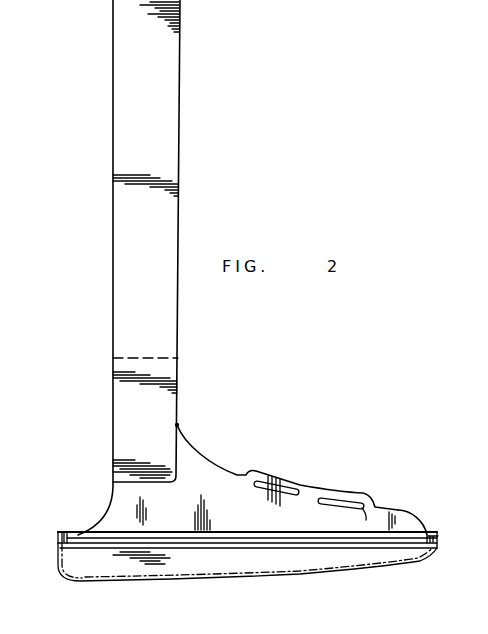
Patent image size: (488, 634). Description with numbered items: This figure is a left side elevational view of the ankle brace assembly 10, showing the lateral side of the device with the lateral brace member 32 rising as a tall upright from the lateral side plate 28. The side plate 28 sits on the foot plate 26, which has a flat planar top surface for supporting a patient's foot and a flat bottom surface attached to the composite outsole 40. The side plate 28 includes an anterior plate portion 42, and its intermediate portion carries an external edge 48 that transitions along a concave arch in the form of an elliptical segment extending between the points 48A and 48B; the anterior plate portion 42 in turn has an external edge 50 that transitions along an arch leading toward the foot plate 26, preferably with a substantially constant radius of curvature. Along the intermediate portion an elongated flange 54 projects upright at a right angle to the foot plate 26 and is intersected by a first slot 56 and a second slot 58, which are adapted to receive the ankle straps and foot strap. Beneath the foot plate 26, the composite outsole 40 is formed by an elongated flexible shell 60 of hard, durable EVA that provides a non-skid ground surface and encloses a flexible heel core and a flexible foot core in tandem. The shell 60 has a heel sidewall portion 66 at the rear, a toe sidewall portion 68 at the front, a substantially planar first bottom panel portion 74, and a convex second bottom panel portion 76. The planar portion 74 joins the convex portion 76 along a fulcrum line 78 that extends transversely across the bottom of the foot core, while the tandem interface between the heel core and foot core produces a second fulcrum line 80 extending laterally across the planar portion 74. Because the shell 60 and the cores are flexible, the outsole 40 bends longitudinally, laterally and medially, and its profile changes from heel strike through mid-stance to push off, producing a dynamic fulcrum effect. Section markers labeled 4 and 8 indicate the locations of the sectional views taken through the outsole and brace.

The ankle brace assembly 10 is at (226, 115).
The section line 4- 4 is at (145, 345).
The section line 8- 8 is at (97, 442).
The foot plate 26 is at (442, 530).
The lateral side plate 28 is at (243, 510).
The lateral brace member 32 is at (140, 128).
The composite outsole 40 is at (358, 562).
The anterior plate portion 42 is at (410, 0).
The external edge 48 is at (207, 457).
The end point of elliptical line segment 48A is at (178, 425).
The end point of elliptical line segment 48B is at (398, 510).
The external edge of anterior plate portion 50 is at (467, 0).
The elongated flange 54 is at (303, 485).
The first slot 56 is at (280, 508).
The second slot 58 is at (352, 506).
The flexible shell 60 is at (256, 580).
The heel sidewall portion 66 is at (58, 560).
The toe sidewall portion 68 is at (432, 557).
The first bottom panel portion 74 is at (83, 583).
The second bottom panel portion 76 is at (400, 570).
The fulcrum line 78 is at (311, 578).
The fulcrum line 80 is at (172, 581).